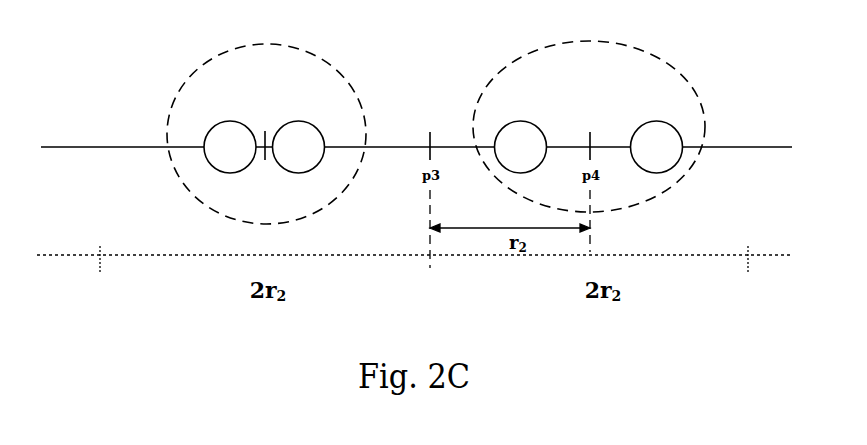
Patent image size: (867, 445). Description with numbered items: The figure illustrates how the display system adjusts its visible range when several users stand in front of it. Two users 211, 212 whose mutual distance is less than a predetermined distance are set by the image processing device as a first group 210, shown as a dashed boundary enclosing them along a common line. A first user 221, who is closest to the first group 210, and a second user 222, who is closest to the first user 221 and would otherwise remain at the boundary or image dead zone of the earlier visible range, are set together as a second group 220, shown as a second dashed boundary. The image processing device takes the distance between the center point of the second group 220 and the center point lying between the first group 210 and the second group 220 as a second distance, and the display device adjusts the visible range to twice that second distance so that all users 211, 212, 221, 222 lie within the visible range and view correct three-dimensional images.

The first group 210 is at (263, 44).
The user 211 is at (229, 121).
The user 212 is at (298, 121).
The second group 220 is at (583, 41).
The first user 221 is at (520, 121).
The second user 222 is at (656, 121).